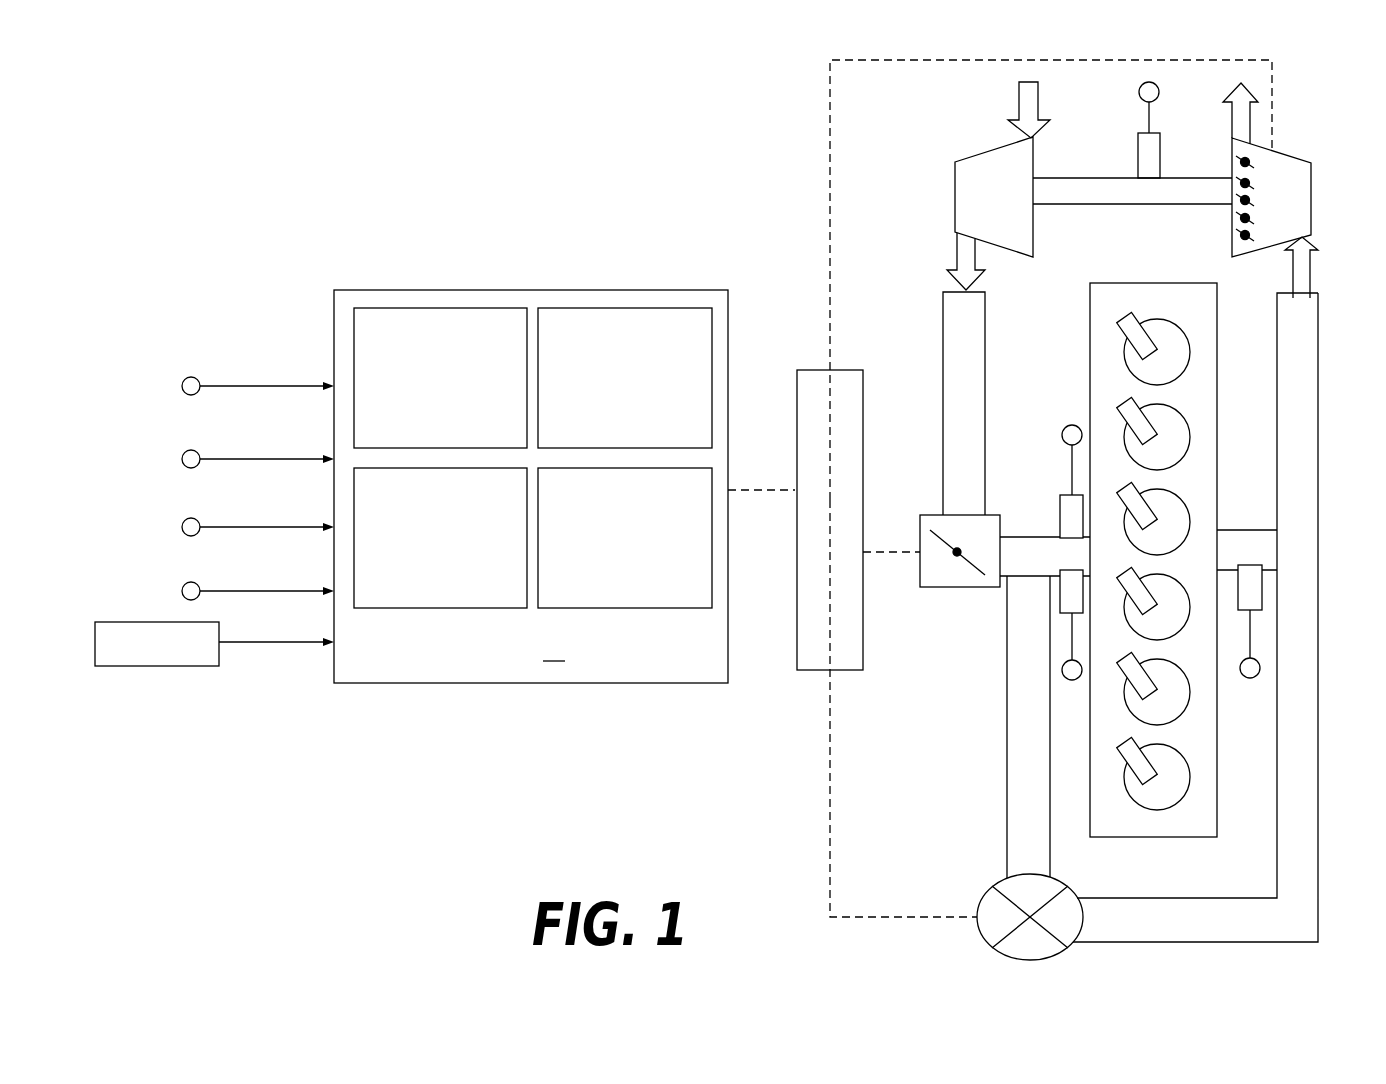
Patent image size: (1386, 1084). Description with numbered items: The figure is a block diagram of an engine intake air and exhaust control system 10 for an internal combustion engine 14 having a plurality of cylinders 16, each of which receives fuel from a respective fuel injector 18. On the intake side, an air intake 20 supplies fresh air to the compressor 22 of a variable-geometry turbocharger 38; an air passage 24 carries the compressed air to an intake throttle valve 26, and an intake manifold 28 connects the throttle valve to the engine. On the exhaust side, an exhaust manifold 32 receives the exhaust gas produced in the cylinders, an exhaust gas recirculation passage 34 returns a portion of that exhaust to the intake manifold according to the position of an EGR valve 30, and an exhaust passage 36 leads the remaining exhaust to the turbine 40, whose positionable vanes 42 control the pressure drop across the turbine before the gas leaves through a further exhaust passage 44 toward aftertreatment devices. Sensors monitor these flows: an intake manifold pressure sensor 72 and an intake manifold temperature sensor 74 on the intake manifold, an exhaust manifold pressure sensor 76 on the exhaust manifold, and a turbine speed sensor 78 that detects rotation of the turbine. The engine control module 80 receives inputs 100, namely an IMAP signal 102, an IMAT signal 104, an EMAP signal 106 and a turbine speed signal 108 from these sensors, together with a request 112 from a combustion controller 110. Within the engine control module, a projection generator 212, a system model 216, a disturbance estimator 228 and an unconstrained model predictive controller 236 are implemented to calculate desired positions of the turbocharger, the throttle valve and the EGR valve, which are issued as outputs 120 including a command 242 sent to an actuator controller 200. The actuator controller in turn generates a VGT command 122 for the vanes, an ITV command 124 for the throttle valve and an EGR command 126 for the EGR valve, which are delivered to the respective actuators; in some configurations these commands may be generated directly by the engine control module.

The engine intake air and exhaust control system 10 is at (442, 185).
The internal combustion engine 14 is at (1105, 293).
The cylinder 16 is at (1178, 305).
The fuel injector 18 is at (1104, 322).
The air intake 20 is at (1019, 108).
The compressor 22 is at (960, 195).
The air passage 24 is at (945, 415).
The intake throttle valve 26 is at (927, 573).
The intake manifold 28 is at (1062, 557).
The EGR valve 30 is at (990, 900).
The exhaust manifold 32 is at (1258, 557).
The exhaust gas recirculation passage 34 is at (1310, 828).
The exhaust passage 36 is at (1310, 350).
The variable-geometry turbocharger 38 is at (1340, 92).
The turbine 40 is at (1300, 187).
The positionable vanes 42 is at (1242, 159).
The exhaust passage 44 is at (1237, 115).
The intake manifold pressure sensor 72 is at (1068, 505).
The intake manifold temperature sensor 74 is at (1068, 598).
The exhaust manifold pressure sensor 76 is at (1255, 602).
The turbine speed sensor 78 is at (1142, 147).
The engine control module 80 is at (531, 486).
The inputs 100 is at (152, 312).
The IMAP signal 102 is at (184, 380).
The IMAT signal 104 is at (184, 453).
The sensor input 106 is at (184, 522).
The turbine speed signal 108 is at (184, 586).
The combustion controller 110 is at (167, 666).
The request 112 is at (282, 643).
The outputs 120 is at (768, 322).
The VGT command 122 is at (830, 213).
The ITV command 124 is at (882, 550).
The EGR command 126 is at (830, 820).
The actuator controller 200 is at (850, 370).
The projection generator 212 is at (456, 418).
The system model 216 is at (456, 578).
The disturbance estimator 228 is at (641, 417).
The unconstrained model predictive controller 236 is at (641, 576).
The command 242 is at (778, 492).